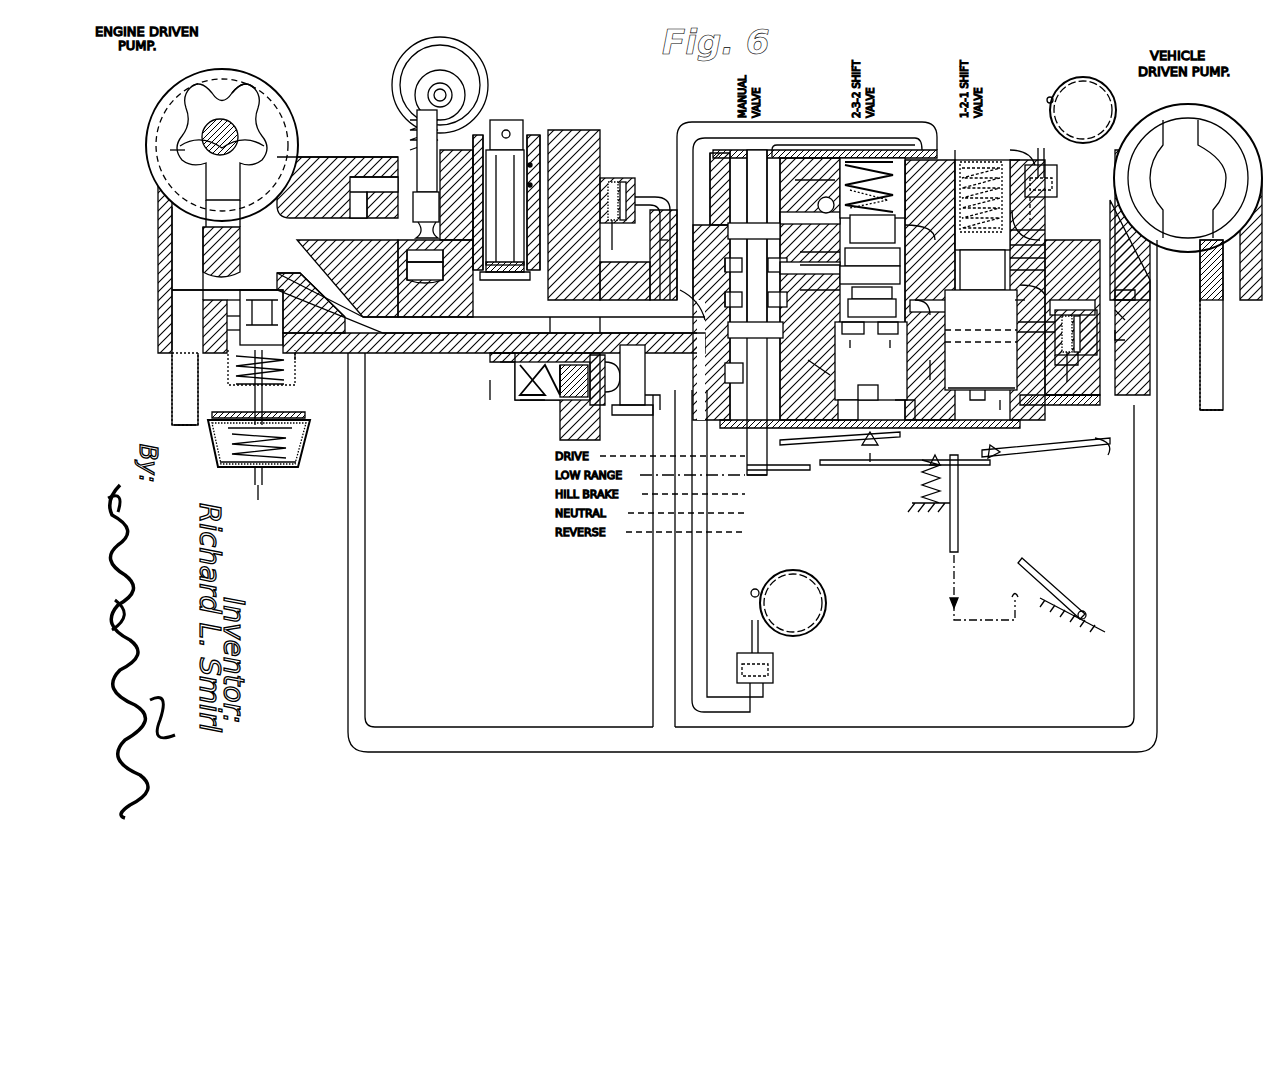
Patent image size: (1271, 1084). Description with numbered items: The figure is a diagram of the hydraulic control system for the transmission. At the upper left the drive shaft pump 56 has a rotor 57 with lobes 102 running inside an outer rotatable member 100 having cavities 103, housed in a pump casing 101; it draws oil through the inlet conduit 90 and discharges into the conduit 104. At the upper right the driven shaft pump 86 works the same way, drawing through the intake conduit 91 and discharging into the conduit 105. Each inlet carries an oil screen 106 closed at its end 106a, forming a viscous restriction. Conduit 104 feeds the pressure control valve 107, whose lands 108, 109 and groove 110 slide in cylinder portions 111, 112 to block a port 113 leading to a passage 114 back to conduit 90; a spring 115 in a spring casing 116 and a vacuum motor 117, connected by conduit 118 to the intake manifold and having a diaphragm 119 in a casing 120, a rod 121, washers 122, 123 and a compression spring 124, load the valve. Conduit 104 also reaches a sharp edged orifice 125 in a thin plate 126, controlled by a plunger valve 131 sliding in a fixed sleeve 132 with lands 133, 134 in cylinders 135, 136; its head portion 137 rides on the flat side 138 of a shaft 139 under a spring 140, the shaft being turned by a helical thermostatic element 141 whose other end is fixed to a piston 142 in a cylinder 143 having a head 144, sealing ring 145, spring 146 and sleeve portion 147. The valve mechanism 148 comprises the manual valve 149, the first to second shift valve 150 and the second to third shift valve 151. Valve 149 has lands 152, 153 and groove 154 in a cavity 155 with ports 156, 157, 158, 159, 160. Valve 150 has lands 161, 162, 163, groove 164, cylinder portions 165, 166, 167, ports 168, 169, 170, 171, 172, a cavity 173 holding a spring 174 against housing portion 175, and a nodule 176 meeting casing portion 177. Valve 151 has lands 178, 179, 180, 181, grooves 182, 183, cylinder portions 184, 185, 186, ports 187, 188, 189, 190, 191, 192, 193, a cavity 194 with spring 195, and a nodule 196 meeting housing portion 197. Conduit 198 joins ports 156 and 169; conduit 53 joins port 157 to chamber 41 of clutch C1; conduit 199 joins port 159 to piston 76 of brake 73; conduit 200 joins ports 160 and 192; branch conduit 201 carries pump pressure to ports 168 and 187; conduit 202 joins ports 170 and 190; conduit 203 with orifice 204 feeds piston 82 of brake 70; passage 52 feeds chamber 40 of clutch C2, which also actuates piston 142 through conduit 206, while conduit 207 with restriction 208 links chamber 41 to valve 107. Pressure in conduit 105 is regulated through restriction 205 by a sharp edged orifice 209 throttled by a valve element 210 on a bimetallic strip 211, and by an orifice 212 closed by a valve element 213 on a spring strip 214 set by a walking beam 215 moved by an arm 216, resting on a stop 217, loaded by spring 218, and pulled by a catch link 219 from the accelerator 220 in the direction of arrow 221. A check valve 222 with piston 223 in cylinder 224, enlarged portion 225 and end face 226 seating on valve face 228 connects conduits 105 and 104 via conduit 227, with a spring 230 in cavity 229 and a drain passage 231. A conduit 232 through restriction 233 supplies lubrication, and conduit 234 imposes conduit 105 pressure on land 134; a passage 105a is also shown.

The drive shaft pump 56 is at (248, 68).
The rotor 57 is at (215, 95).
The outer rotatable member 100 is at (200, 88).
The pump casing 101 is at (165, 213).
The lobes 102 is at (250, 96).
The cavities 103 is at (170, 135).
The inlet conduit 90 is at (180, 247).
The discharge conduit 104 is at (438, 304).
The discharge conduit 105 is at (1150, 353).
The passage 105a is at (870, 416).
The oil screen 106 is at (172, 376).
The screen end 106a is at (1212, 428).
The pressure control valve 107 is at (268, 290).
The land 108 is at (223, 298).
The land 109 is at (238, 330).
The groove 110 is at (238, 314).
The cylinder portion 111 is at (262, 297).
The cylinder portion 112 is at (249, 367).
The port 113 is at (311, 294).
The passage 114 is at (222, 285).
The spring 115 is at (285, 372).
The spring casing 116 is at (285, 385).
The vacuum motor 117 is at (300, 470).
The conduit 118 is at (249, 516).
The flexible diaphragm 119 is at (300, 435).
The casing 120 is at (255, 478).
The longitudinally movable rod 121 is at (255, 389).
The washer 122 is at (285, 405).
The washer 123 is at (300, 450).
The compression spring 124 is at (220, 462).
The orifice 125 is at (425, 272).
The thin plate 126 is at (424, 253).
The plunger valve 131 is at (416, 232).
The fixed sleeve 132 is at (395, 156).
The land 133 is at (412, 140).
The land 134 is at (374, 197).
The cylinder 135 is at (505, 207).
The cylinder 136 is at (505, 208).
The enlarged head portion 137 is at (428, 92).
The flat side 138 is at (448, 98).
The rotatable shaft 139 is at (440, 70).
The spring 140 is at (410, 120).
The helical thermostatic element 141 is at (405, 55).
The piston 142 is at (520, 120).
The cylinder 143 is at (535, 185).
The enlarged head 144 is at (530, 262).
The flexible annular sealing ring 145 is at (535, 275).
The compression spring 146 is at (535, 167).
The fixed sleeve portion 147 is at (548, 142).
The valve mechanism 148 is at (800, 110).
The manually operated valve 149 is at (740, 148).
The first speed ratio to second speed ratio shift valve 150 is at (975, 150).
The second speed ratio to third speed ratio shift valve 151 is at (880, 150).
The land 152 is at (754, 231).
The land 153 is at (755, 330).
The groove 154 is at (758, 280).
The cylindrical cavity 155 is at (843, 137).
The port 156 is at (725, 245).
The port 157 is at (734, 265).
The port 158 is at (734, 299).
The port 159 is at (720, 315).
The port 160 is at (734, 373).
The land 161 is at (1050, 225).
The land 162 is at (982, 270).
The land 163 is at (1035, 370).
The groove 164 is at (1045, 251).
The cylinder portion 165 is at (955, 158).
The cylinder portion 166 is at (981, 340).
The cylinder portion 167 is at (948, 352).
The port 168 is at (975, 165).
The port 169 is at (1047, 238).
The port 170 is at (1045, 265).
The bleed port 171 is at (1056, 282).
The port 172 is at (1025, 412).
The cavity 173 is at (1050, 192).
The compression spring 174 is at (1010, 158).
The housing portion 175 is at (1027, 145).
The nodule 176 is at (982, 380).
The casing portion 177 is at (965, 391).
The land 178 is at (872, 232).
The land 179 is at (870, 275).
The land 180 is at (854, 348).
The land 181 is at (871, 361).
The groove 182 is at (872, 257).
The groove 183 is at (872, 308).
The cylinder portion 184 is at (825, 145).
The cylinder portion 185 is at (872, 294).
The cylinder portion 186 is at (921, 370).
The port 187 is at (905, 160).
The bleed port 188 is at (817, 197).
The port 189 is at (820, 255).
The port 190 is at (820, 269).
The port 191 is at (820, 292).
The port 192 is at (888, 348).
The port 193 is at (911, 413).
The cavity 194 is at (815, 173).
The compression spring 195 is at (862, 158).
The nodule 196 is at (879, 389).
The housing portion 197 is at (847, 410).
The conduit 198 is at (753, 186).
The conduit 199 is at (700, 565).
The conduit 200 is at (820, 366).
The branch conduit 201 is at (690, 122).
The conduit 202 is at (985, 320).
The conduit 203 is at (1040, 212).
The restricted orifice 204 is at (922, 243).
The restriction 205 is at (1010, 452).
The conduit 206 is at (595, 300).
The conduit 207 is at (479, 363).
The restriction 208 is at (316, 362).
The sharp edged orifice 209 is at (999, 397).
The valve element 210 is at (995, 460).
The bimetallic strip 211 is at (1080, 448).
The orifice 212 is at (880, 437).
The valve element 213 is at (890, 466).
The spring strip 214 is at (820, 446).
The walking beam 215 is at (872, 468).
The arm 216 is at (780, 476).
The stop 217 is at (938, 455).
The compression spring 218 is at (920, 498).
The catch link 219 is at (960, 508).
The accelerator 220 is at (1040, 575).
The arrow 221 is at (950, 598).
The check valve 222 is at (558, 402).
The piston 223 is at (555, 400).
The cylinder 224 is at (540, 400).
The enlarged end portion 225 is at (602, 408).
The end face 226 is at (632, 380).
The conduit 227 is at (660, 578).
The valve face 228 is at (618, 415).
The cavity 229 is at (546, 326).
The spring 230 is at (515, 388).
The passage 231 is at (515, 376).
The conduit 232 is at (1120, 305).
The restriction 233 is at (1140, 285).
The conduit 234 is at (366, 598).
The fluid pressure chamber 40 is at (1053, 352).
The fluid pressure chamber 41 is at (645, 195).
The passage 52 is at (1036, 318).
The conduit 53 is at (660, 241).
The brake 70 is at (1073, 93).
The brake 73 is at (830, 628).
The piston 76 is at (775, 673).
The piston 82 is at (1058, 168).
The driven shaft pump 86 is at (1200, 104).
The intake conduit 91 is at (1223, 294).
The clutch C1 is at (612, 178).
The clutch C2 is at (1076, 332).